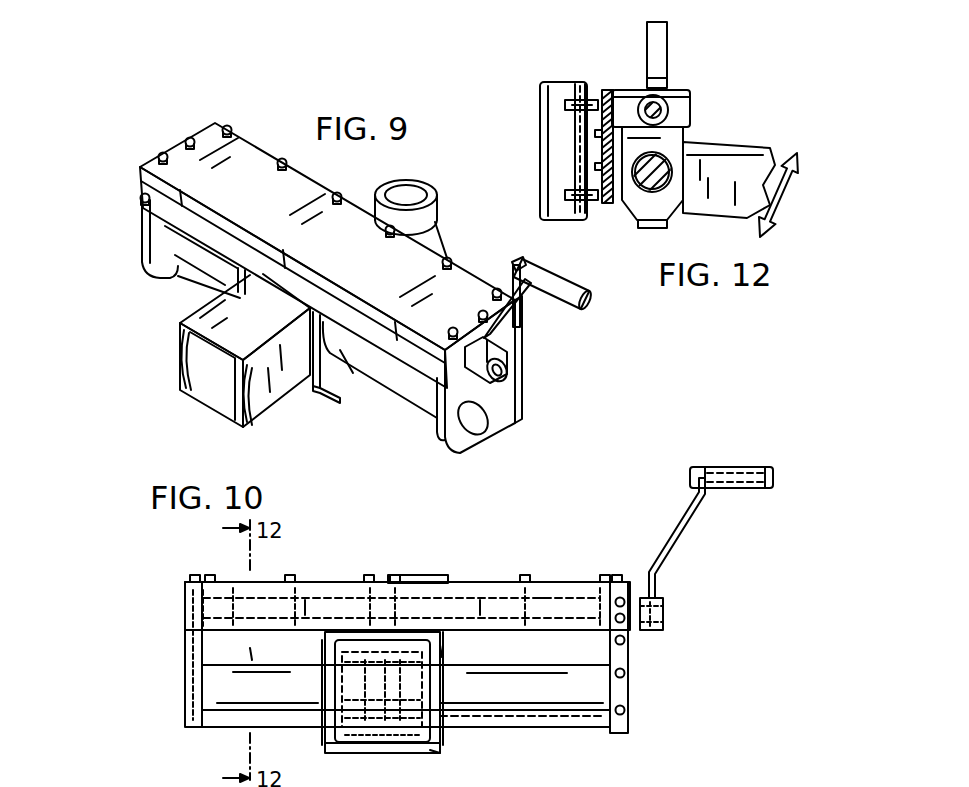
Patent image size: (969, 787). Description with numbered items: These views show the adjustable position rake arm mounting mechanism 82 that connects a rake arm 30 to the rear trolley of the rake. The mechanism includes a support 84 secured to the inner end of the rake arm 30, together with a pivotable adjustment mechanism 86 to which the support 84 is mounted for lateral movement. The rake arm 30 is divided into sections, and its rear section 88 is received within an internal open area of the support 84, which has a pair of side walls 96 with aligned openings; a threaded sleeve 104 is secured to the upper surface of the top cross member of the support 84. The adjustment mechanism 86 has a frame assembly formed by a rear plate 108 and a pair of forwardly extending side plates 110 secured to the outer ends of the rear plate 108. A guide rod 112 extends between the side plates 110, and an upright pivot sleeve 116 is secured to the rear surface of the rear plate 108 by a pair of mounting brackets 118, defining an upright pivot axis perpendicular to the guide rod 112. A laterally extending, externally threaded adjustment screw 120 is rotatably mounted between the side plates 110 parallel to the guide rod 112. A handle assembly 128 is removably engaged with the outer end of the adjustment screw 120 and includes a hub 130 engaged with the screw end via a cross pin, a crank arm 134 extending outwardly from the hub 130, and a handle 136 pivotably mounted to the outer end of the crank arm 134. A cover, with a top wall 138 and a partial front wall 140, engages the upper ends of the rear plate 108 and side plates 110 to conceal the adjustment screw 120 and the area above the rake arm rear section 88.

In FIG. 9, the rake arm 30 is at (173, 360).
In FIG. 10, the rake arm 30 is at (352, 628).
In FIG. 9, the adjustable position rake arm mounting mechanism 82 is at (334, 302).
In FIG. 9, the support 84 is at (340, 398).
In FIG. 10, the support 84 is at (322, 717).
In FIG. 9, the pivotable adjustment mechanism 86 is at (334, 302).
In FIG. 10, the pivotable adjustment mechanism 86 is at (464, 604).
In FIG. 9, the rear section 88 is at (267, 412).
In FIG. 12, the rear section 88 is at (750, 147).
In FIG. 12, the side walls 96 is at (687, 113).
In FIG. 12, the threaded sleeve 104 is at (663, 103).
In FIG. 10, the threaded sleeve 104 is at (433, 755).
In FIG. 12, the rear plate 108 is at (613, 203).
In FIG. 10, the rear plate 108 is at (210, 647).
In FIG. 9, the side plates 110 is at (140, 253).
In FIG. 10, the side plates 110 is at (187, 703).
In FIG. 9, the guide rod 112 is at (417, 410).
In FIG. 12, the guide rod 112 is at (670, 147).
In FIG. 10, the guide rod 112 is at (578, 697).
In FIG. 9, the pivot sleeve 116 is at (427, 177).
In FIG. 12, the pivot sleeve 116 is at (542, 97).
In FIG. 9, the mounting brackets 118 is at (365, 192).
In FIG. 12, the mounting brackets 118 is at (580, 97).
In FIG. 12, the adjustment screw 120 is at (667, 90).
In FIG. 10, the adjustment screw 120 is at (542, 598).
In FIG. 9, the handle assembly 128 is at (530, 321).
In FIG. 10, the handle assembly 128 is at (733, 510).
In FIG. 9, the hub 130 is at (517, 398).
In FIG. 10, the hub 130 is at (653, 630).
In FIG. 10, the crank arm 134 is at (693, 525).
In FIG. 9, the handle 136 is at (574, 285).
In FIG. 10, the handle 136 is at (737, 463).
In FIG. 9, the top wall 138 is at (212, 148).
In FIG. 9, the partial front wall 140 is at (150, 183).
In FIG. 10, the partial front wall 140 is at (232, 593).